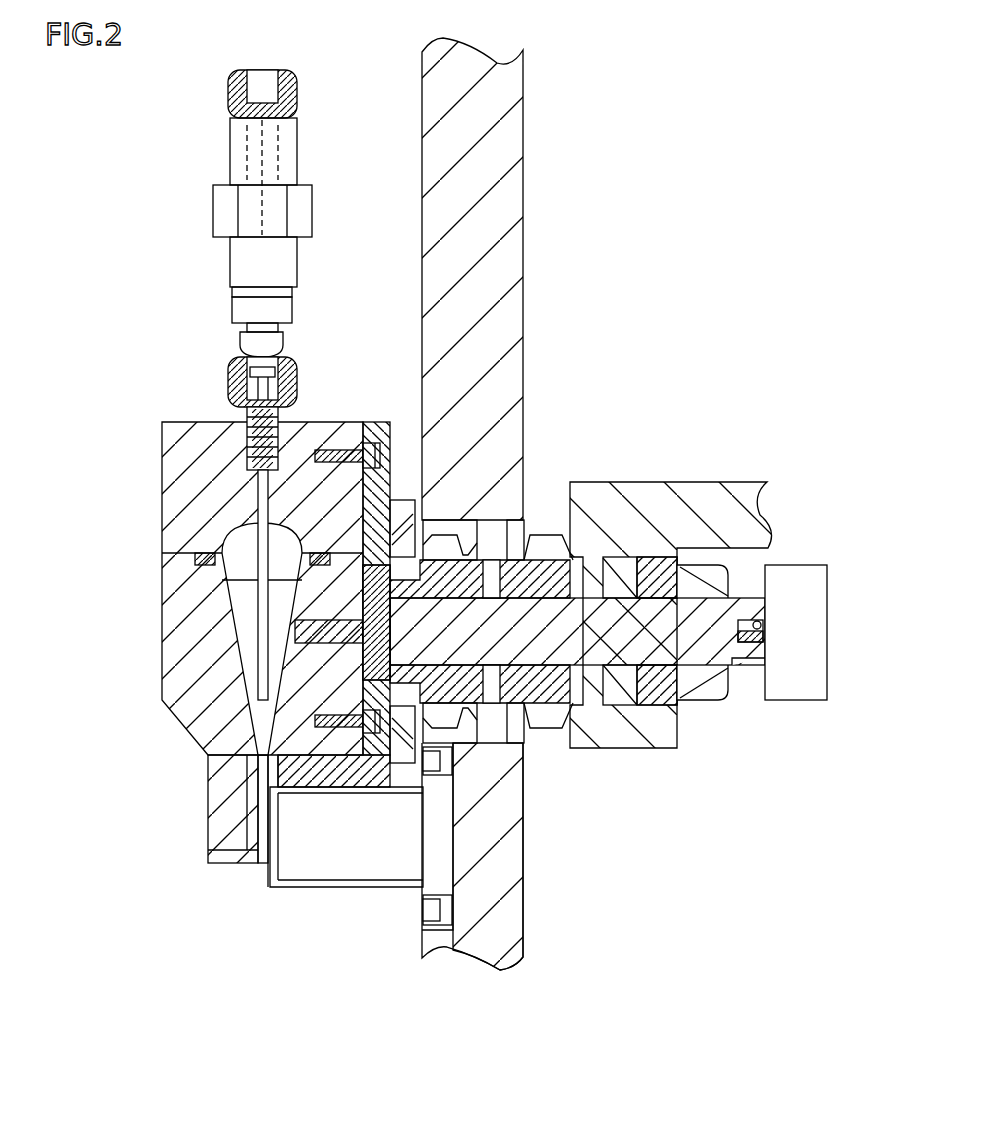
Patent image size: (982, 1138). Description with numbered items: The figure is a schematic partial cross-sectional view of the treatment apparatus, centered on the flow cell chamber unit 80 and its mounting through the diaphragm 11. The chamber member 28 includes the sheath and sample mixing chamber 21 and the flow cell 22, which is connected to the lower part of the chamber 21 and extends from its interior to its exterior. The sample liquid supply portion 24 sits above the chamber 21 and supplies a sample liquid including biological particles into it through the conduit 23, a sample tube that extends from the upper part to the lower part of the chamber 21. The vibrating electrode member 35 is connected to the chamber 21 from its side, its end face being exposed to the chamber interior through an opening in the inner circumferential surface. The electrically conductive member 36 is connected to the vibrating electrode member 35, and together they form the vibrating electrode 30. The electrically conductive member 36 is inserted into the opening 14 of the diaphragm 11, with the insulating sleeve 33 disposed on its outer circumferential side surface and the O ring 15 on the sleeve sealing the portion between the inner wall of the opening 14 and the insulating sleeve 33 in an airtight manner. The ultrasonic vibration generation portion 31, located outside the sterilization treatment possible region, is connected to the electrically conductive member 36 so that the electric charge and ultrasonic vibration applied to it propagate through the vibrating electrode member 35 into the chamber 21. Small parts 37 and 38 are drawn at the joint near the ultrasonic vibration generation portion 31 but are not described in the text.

The diaphragm 11 is at (505, 148).
The opening 14 is at (503, 582).
The O ring 15 is at (545, 540).
The sheath and sample mixing chamber 21 is at (247, 650).
The flow cell 22 is at (243, 797).
The conduit 23 is at (257, 607).
The sample liquid supply portion 24 is at (290, 383).
The chamber member 28 is at (180, 642).
The vibrating electrode 30 is at (385, 1020).
The ultrasonic vibration generation portion 31 is at (795, 688).
The insulating sleeve 33 is at (543, 578).
The vibrating electrode member 35 is at (388, 765).
The electrically conductive member 36 is at (580, 690).
The ball 37 is at (763, 622).
The spring 38 is at (757, 632).
The flow cell chamber unit 80 is at (247, 478).